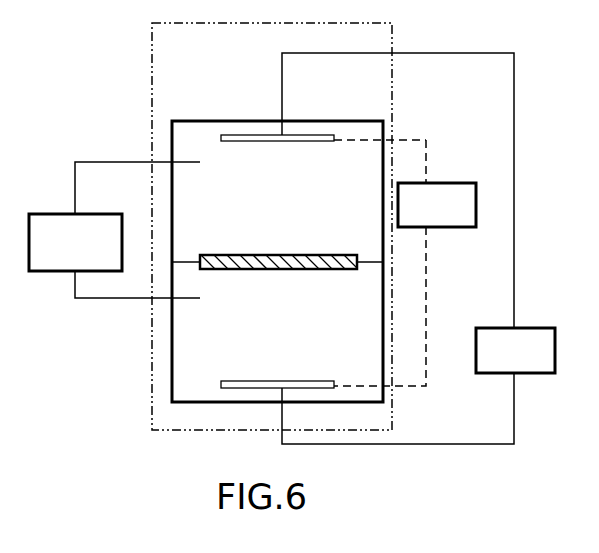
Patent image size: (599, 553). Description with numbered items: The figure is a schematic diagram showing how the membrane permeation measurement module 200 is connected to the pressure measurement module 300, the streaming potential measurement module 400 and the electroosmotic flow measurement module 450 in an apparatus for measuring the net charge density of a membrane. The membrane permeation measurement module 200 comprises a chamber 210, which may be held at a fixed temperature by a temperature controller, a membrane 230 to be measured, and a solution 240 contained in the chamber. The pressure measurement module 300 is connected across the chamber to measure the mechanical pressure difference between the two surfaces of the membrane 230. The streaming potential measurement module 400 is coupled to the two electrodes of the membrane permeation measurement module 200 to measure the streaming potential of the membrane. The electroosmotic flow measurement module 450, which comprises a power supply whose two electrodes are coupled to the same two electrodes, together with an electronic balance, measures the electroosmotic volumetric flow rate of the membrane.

The membrane permeation measurement module 200 is at (225, 50).
The chamber 210 is at (329, 118).
The membrane 230 is at (257, 262).
The solution 240 is at (259, 335).
The pressure measurement module 300 is at (59, 254).
The streaming potential measurement module 400 is at (500, 361).
The electroosmotic flow measurement module 450 is at (422, 216).